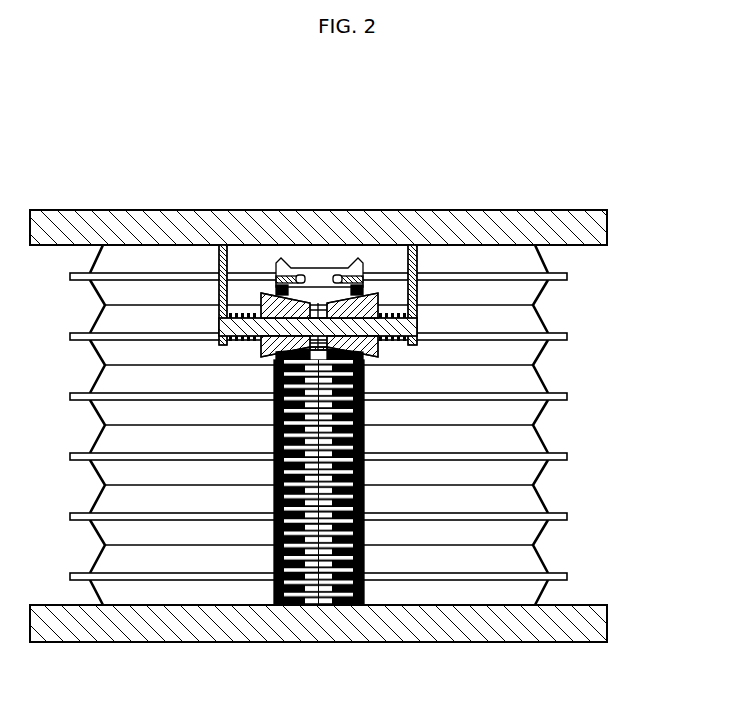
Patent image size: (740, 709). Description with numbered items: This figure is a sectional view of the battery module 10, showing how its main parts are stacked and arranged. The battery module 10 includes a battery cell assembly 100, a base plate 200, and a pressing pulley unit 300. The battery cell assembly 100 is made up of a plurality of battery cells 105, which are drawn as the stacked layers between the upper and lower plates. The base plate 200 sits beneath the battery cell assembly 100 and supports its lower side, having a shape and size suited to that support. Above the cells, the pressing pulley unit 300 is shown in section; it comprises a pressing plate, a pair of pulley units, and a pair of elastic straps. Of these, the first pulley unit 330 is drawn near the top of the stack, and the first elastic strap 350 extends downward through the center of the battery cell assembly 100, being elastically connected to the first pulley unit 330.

The battery module 10 is at (122, 127).
The battery cell assembly 100 is at (354, 425).
The battery cell 105 is at (525, 498).
The base plate 200 is at (608, 622).
The pressing pulley unit 300 is at (620, 201).
The first pulley unit 330 is at (433, 319).
The first elastic strap 350 is at (380, 440).